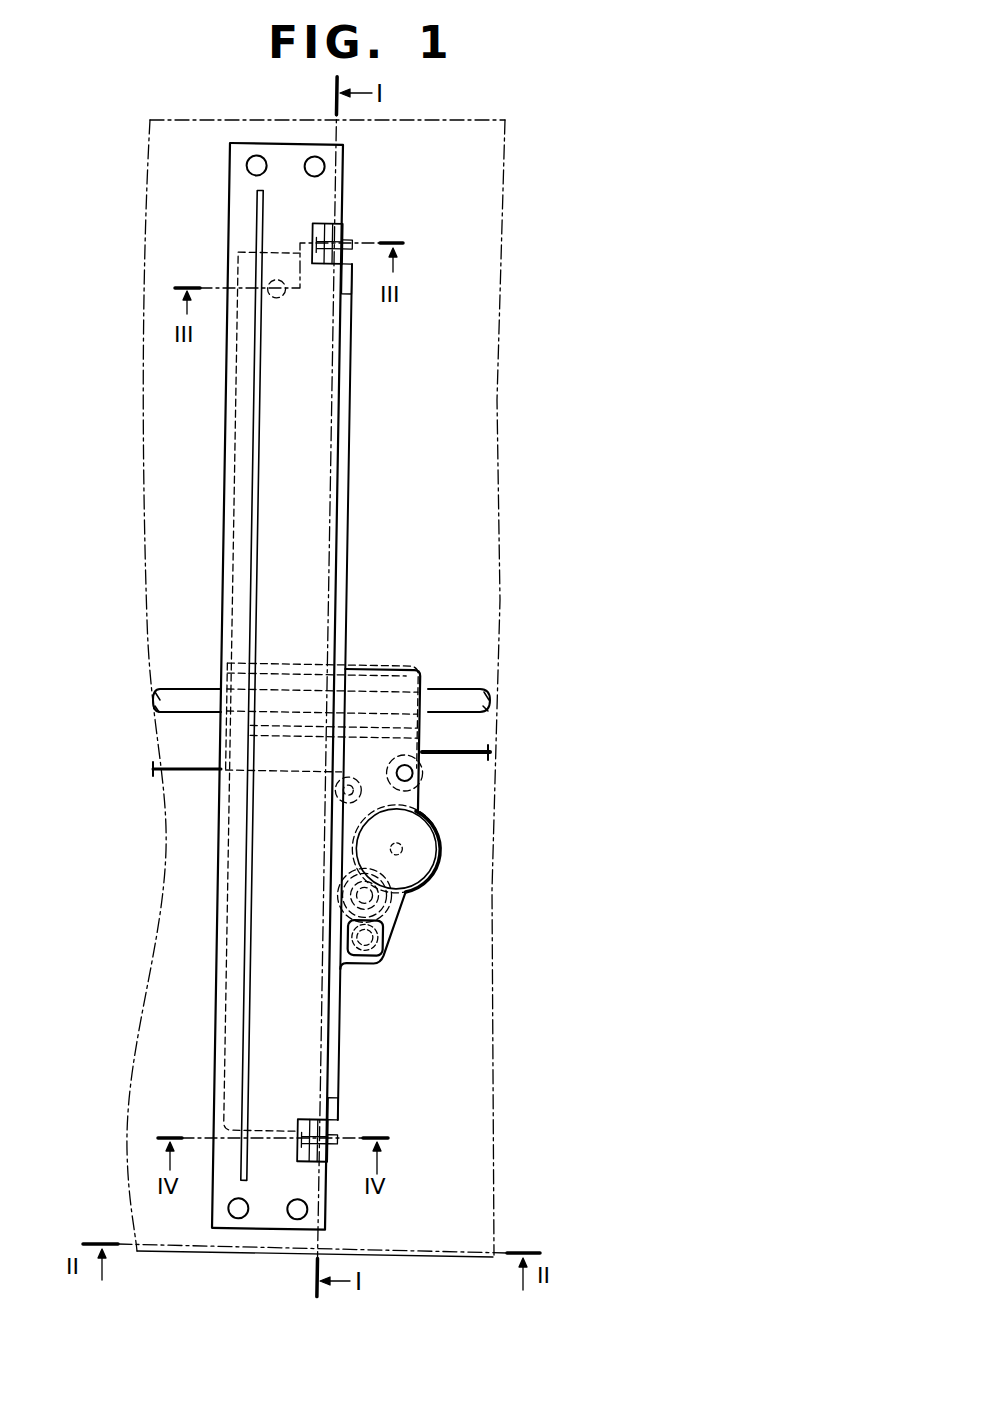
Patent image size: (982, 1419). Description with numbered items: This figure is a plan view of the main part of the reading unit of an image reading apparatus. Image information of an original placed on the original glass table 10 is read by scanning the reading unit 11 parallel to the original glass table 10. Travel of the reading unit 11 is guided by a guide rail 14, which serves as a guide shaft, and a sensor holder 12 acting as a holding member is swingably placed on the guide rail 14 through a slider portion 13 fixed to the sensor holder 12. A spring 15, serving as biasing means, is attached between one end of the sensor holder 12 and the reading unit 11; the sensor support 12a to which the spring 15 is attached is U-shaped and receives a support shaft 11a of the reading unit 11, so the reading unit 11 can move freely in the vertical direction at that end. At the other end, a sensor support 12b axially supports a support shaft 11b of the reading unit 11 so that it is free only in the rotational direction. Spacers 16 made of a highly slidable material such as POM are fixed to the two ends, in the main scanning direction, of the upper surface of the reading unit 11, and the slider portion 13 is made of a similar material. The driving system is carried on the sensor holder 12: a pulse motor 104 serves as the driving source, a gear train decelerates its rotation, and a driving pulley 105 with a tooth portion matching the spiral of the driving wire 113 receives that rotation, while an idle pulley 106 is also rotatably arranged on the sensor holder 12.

The original glass table 10 is at (460, 374).
The reading unit 11 is at (228, 482).
The support shaft 11a is at (352, 270).
The support shaft 11b is at (334, 1122).
The sensor holder 12 is at (335, 1068).
The sensor support 12a is at (346, 236).
The sensor support 12b is at (333, 1142).
The slider portion 13 is at (423, 665).
The guide rail 14 is at (466, 698).
The spring 15 is at (286, 293).
The spacers 16 is at (314, 157).
The pulse motor 104 is at (386, 950).
The driving pulley 105 is at (433, 852).
The idle pulley 106 is at (424, 771).
The driving wire 113 is at (456, 750).